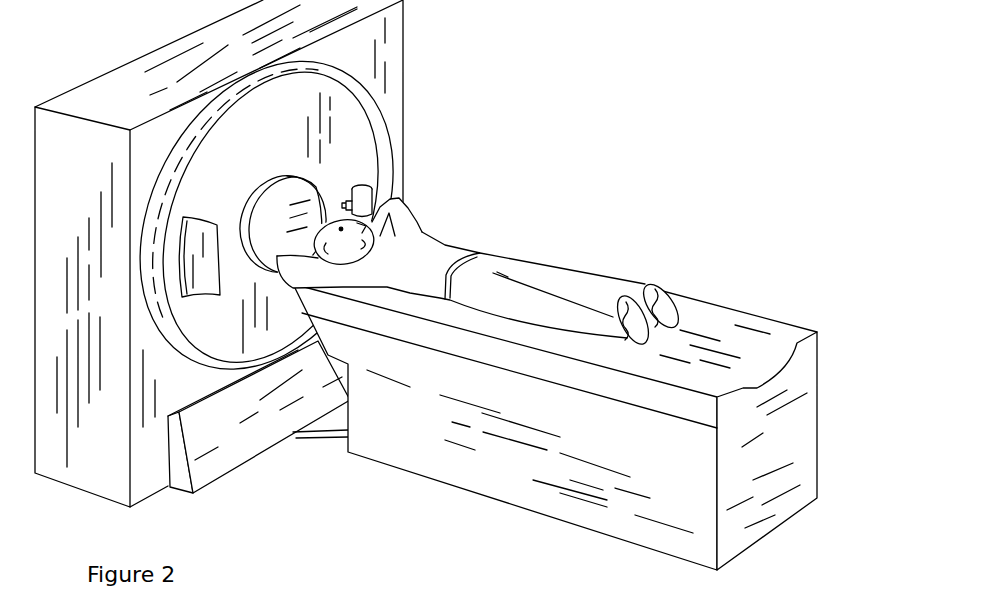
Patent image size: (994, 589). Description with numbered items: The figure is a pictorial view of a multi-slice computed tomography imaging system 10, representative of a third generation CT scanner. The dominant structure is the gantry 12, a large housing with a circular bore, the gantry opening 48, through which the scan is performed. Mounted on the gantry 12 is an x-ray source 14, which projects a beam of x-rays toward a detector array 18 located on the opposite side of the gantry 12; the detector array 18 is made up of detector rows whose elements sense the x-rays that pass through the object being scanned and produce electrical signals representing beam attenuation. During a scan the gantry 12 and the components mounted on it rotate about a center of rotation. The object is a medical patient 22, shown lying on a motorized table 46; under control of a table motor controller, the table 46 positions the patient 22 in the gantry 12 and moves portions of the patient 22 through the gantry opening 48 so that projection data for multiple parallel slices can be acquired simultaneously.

The CT imaging system 10 is at (425, 285).
The gantry 12 is at (69, 162).
The x-ray source 14 is at (372, 192).
The detector array 18 is at (197, 305).
The patient 22 is at (421, 240).
The motorized table 46 is at (443, 458).
The gantry opening 48 is at (313, 176).